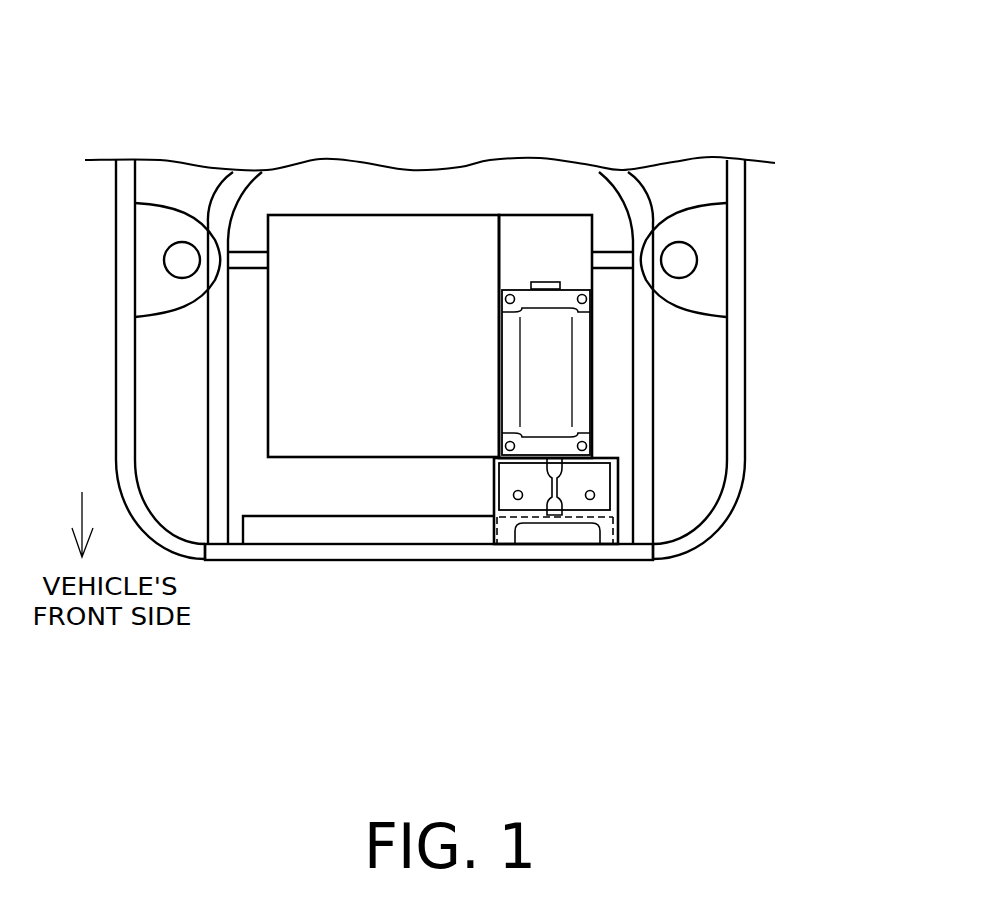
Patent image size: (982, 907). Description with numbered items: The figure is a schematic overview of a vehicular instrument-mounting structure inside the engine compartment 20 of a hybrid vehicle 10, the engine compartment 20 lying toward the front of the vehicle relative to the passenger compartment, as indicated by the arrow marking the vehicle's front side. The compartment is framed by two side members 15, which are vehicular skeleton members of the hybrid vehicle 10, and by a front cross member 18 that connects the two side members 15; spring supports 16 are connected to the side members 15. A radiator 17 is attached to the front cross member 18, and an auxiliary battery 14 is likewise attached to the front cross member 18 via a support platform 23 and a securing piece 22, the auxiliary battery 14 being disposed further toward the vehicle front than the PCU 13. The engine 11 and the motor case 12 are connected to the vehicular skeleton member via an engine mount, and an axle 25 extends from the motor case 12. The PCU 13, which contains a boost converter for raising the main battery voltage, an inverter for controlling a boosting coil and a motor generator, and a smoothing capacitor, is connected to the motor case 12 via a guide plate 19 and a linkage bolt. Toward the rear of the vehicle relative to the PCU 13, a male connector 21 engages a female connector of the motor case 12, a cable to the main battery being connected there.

The hybrid vehicle 10 is at (450, 20).
The engine 11 is at (365, 215).
The motor case 12 is at (543, 215).
The PCU 13 is at (565, 302).
The auxiliary battery 14 is at (624, 545).
The side members 15 is at (207, 395).
The spring supports 16 is at (725, 258).
The radiator 17 is at (310, 528).
The front cross member 18 is at (622, 562).
The guide plate 19 is at (508, 276).
The engine compartment 20 is at (250, 113).
The male connector 21 is at (543, 281).
The securing piece 22 is at (547, 497).
The support platform 23 is at (495, 488).
The axle 25 is at (613, 250).